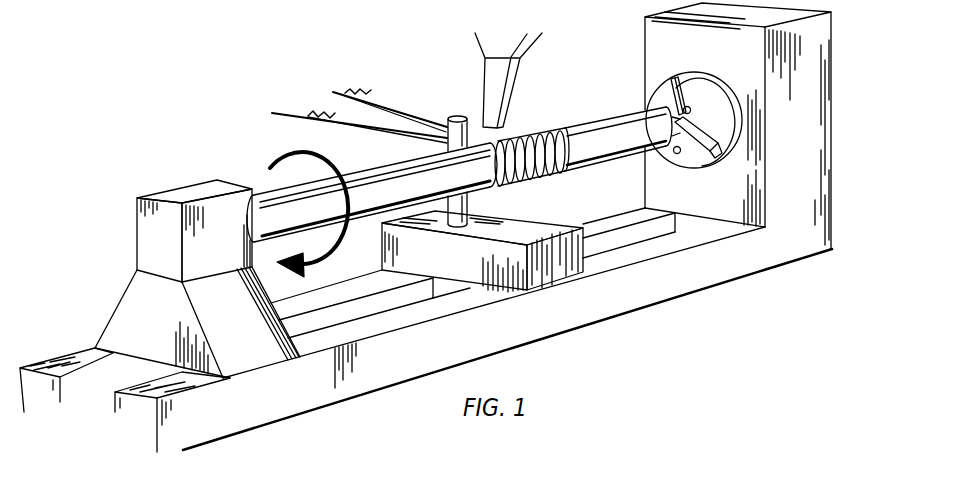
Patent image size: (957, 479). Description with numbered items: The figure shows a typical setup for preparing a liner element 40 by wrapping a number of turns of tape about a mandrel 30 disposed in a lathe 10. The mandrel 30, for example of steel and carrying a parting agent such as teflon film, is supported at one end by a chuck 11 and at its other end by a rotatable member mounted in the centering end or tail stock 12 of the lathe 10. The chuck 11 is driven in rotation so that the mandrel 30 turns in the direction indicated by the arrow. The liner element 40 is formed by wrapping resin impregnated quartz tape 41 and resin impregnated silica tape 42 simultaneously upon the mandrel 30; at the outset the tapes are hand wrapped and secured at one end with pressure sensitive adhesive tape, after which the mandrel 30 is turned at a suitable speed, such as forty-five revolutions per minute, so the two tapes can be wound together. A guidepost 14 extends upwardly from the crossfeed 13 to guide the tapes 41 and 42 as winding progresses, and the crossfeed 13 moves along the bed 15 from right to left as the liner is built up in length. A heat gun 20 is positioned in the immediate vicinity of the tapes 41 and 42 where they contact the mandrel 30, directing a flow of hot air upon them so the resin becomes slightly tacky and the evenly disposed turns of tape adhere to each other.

The lathe 10 is at (390, 373).
The chuck 11 is at (655, 100).
The tail stock 12 is at (200, 249).
The crossfeed 13 is at (511, 225).
The guidepost 14 is at (447, 145).
The bed 15 is at (652, 245).
The heat gun 20 is at (493, 42).
The mandrel 30 is at (263, 190).
The liner element 40 is at (530, 134).
The resin impregnated quartz tape 41 is at (383, 95).
The resin impregnated silica tape 42 is at (300, 113).